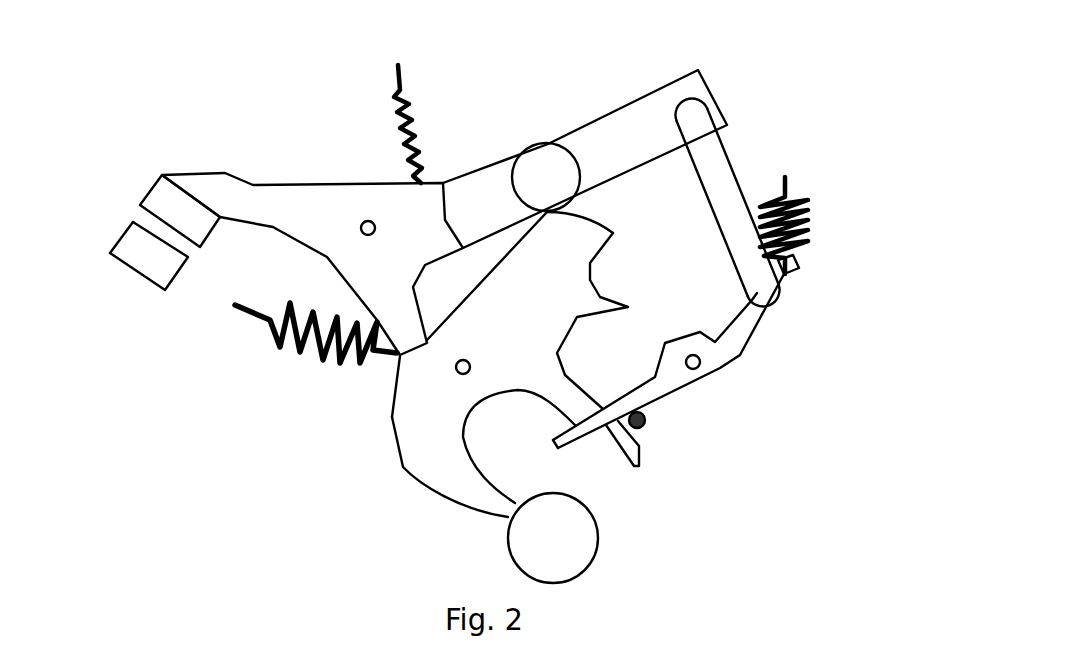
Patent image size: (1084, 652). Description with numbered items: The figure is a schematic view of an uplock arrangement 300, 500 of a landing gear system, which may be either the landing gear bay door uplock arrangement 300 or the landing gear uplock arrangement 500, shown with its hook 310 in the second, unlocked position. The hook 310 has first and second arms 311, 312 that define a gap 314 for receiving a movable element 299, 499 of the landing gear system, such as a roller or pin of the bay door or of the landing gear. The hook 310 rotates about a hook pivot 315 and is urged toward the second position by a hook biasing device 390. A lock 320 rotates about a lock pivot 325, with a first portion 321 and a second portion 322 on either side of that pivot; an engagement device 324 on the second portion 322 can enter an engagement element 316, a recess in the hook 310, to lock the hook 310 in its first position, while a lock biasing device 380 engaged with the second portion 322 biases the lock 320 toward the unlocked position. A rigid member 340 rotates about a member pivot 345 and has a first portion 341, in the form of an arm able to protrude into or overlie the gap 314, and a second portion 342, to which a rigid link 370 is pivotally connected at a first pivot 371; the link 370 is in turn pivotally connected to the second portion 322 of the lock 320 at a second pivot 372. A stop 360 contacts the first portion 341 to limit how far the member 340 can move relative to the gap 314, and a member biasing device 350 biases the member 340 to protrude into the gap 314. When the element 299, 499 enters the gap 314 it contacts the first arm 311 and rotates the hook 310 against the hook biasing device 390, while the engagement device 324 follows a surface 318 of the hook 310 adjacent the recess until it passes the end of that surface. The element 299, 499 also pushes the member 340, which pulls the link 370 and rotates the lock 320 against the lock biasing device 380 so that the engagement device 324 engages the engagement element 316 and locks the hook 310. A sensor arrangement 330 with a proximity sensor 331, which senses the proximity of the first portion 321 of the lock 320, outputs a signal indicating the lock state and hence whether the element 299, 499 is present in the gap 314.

The movable element 299 is at (641, 545).
The movable element 499 is at (610, 540).
The landing gear bay door uplock arrangement 300 is at (677, 133).
The landing gear uplock arrangement 500 is at (677, 133).
The hook 310 is at (480, 376).
The first arm 311 is at (644, 461).
The second arm 312 is at (400, 471).
The gap 314 is at (502, 445).
The hook pivot 315 is at (452, 370).
The engagement element 316 is at (600, 278).
The surface 318 is at (590, 213).
The lock 320 is at (253, 246).
The first portion 321 is at (153, 173).
The second portion 322 is at (603, 104).
The engagement device 324 is at (546, 175).
The lock pivot 325 is at (367, 213).
The sensor arrangement 330 is at (150, 294).
The sensor 331 is at (118, 232).
The member 340 is at (705, 406).
The first portion 341 is at (580, 449).
The second portion 342 is at (764, 287).
The member pivot 345 is at (692, 368).
The member biasing device 350 is at (812, 232).
The stop 360 is at (648, 422).
The link 370 is at (753, 173).
The first pivot 371 is at (795, 277).
The second pivot 372 is at (687, 112).
The lock biasing device 380 is at (384, 93).
The hook biasing device 390 is at (263, 348).